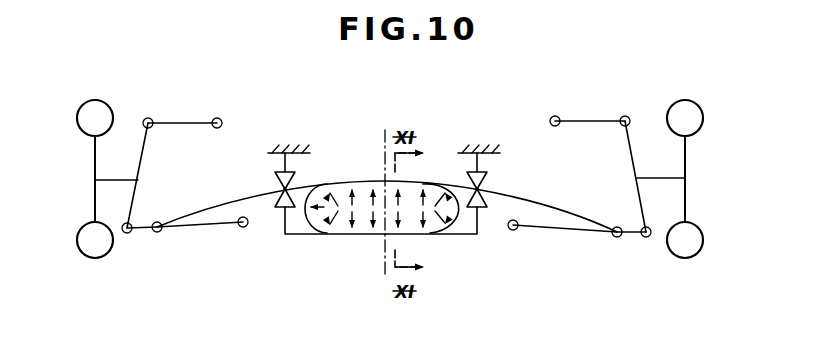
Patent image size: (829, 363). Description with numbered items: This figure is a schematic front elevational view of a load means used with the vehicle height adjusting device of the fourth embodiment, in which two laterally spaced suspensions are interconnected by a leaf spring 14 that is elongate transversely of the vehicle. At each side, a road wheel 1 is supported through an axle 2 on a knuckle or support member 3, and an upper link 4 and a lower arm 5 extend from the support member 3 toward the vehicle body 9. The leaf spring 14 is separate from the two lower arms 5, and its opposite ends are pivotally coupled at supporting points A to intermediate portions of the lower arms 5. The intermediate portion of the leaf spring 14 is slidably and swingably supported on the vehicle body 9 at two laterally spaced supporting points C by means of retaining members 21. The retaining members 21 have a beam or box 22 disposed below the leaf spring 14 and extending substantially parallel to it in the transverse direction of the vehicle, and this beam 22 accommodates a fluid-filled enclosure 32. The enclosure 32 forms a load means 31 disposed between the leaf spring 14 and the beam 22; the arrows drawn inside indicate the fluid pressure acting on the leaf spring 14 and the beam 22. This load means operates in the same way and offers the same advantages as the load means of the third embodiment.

The road wheel 1 is at (83, 106).
The axle 2 is at (112, 179).
The knuckle or support member 3 is at (146, 152).
The upper link 4 is at (187, 120).
The lower arm 5 is at (190, 228).
The supporting point A is at (157, 234).
The supporting point C is at (283, 187).
The vehicle body 9 is at (290, 151).
The retaining member 21 is at (285, 210).
The beam or box 22 is at (306, 236).
The leaf spring 14 is at (452, 192).
The load means 31 is at (365, 192).
The fluid-filled enclosure 32 is at (446, 226).